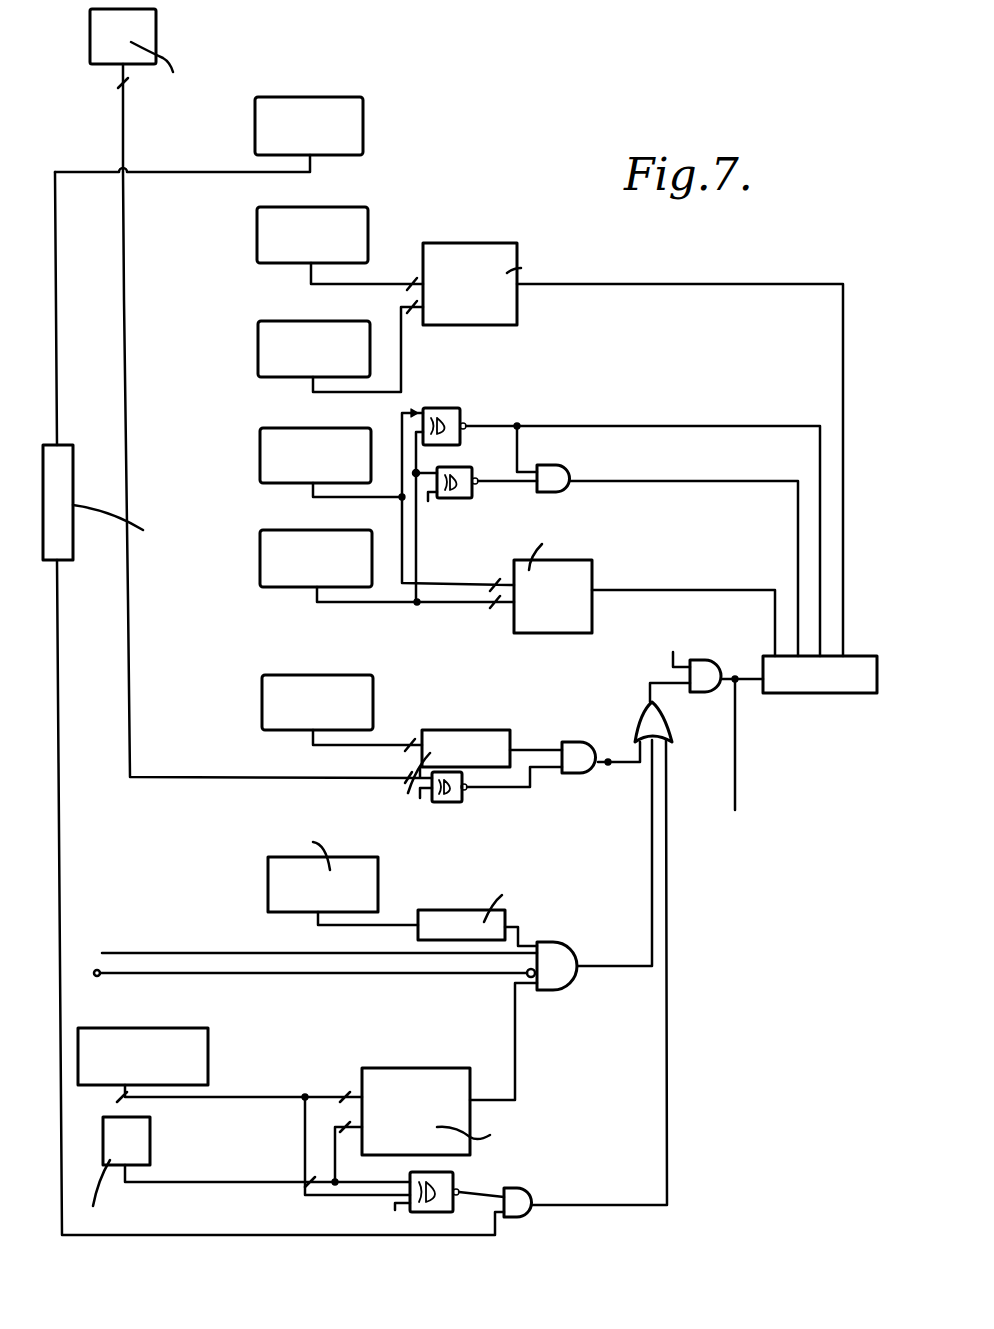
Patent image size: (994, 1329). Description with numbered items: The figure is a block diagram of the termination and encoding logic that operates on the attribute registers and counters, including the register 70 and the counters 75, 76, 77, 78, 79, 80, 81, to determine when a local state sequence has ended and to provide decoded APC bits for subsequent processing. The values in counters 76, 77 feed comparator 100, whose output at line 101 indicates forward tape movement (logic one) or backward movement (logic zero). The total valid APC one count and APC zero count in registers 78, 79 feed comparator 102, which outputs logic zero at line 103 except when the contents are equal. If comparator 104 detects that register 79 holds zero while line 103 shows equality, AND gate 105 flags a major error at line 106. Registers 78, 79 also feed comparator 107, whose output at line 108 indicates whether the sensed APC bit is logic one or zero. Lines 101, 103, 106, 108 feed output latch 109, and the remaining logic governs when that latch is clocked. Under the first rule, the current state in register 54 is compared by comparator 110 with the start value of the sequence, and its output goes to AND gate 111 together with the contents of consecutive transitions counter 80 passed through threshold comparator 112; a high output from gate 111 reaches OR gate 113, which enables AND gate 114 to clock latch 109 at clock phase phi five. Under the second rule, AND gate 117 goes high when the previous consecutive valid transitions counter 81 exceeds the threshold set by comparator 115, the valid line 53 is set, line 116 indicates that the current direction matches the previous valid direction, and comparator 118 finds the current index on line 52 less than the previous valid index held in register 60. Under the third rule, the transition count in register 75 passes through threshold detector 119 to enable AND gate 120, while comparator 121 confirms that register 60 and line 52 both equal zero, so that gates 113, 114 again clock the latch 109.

The current index line 52 is at (253, 1097).
The valid line 53 is at (145, 943).
The current state register 54 is at (148, 40).
The previous valid index register 60 is at (150, 1135).
The register 70 is at (180, 1040).
The transition count register 75 is at (360, 122).
The counter 76 is at (362, 221).
The counter 77 is at (343, 327).
The total valid APC 1 count register 78 is at (351, 412).
The total valid APC 0 count register 79 is at (290, 577).
The consecutive transitions counter 80 is at (268, 712).
The previous consecutive valid transitions counter 81 is at (272, 892).
The comparator 100 is at (473, 253).
The direction output line 101 is at (712, 272).
The comparator 102 is at (454, 407).
The output line 103 is at (649, 412).
The comparator 104 is at (462, 498).
The AND gate 105 is at (553, 493).
The error flag line 106 is at (727, 481).
The comparator 107 is at (553, 625).
The APC bit output line 108 is at (664, 590).
The output latch 109 is at (797, 693).
The comparator 110 is at (455, 803).
The AND gate 111 is at (580, 773).
The threshold comparator 112 is at (473, 732).
The OR gate 113 is at (640, 722).
The AND gate 114 is at (700, 660).
The threshold comparator 115 is at (468, 915).
The direction input line 116 is at (423, 980).
The AND gate 117 is at (571, 952).
The comparator 118 is at (425, 1068).
The threshold detector 119 is at (73, 541).
The AND gate 120 is at (526, 1199).
The comparator 121 is at (450, 1176).